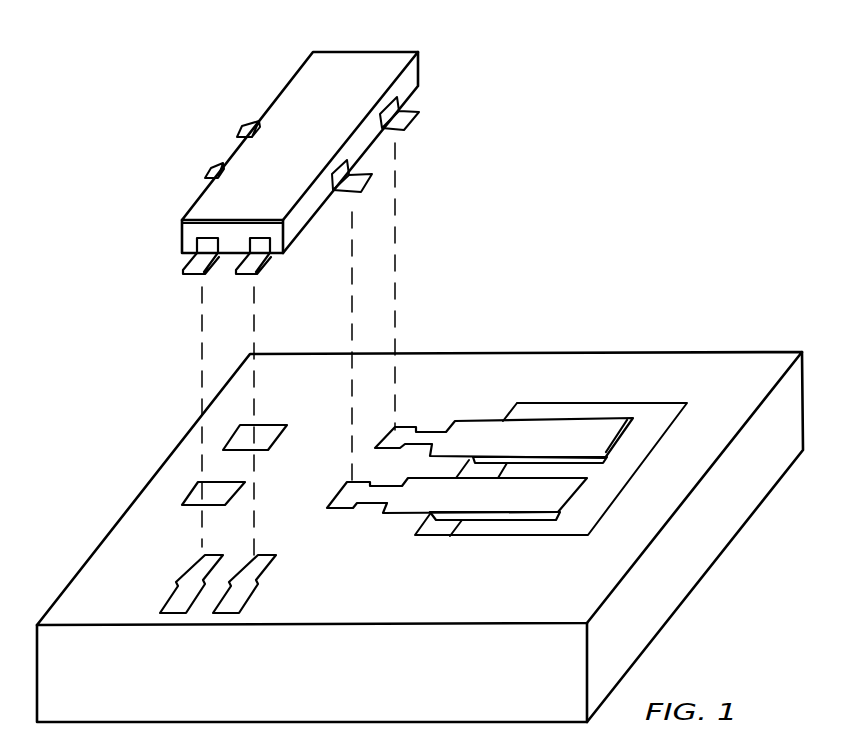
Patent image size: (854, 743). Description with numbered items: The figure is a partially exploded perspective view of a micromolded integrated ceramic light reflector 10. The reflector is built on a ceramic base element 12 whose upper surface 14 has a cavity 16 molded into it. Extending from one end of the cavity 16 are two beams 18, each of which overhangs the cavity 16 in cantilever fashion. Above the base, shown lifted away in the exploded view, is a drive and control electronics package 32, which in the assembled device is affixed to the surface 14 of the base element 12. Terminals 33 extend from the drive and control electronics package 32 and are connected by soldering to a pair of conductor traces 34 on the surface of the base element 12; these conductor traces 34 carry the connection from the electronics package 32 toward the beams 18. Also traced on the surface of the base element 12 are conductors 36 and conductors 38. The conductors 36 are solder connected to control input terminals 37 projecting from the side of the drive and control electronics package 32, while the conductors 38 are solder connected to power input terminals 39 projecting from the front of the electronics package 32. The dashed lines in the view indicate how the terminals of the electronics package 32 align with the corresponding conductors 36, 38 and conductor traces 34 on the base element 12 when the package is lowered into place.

The micromolded integrated ceramic light reflector 10 is at (672, 250).
The ceramic base element 12 is at (663, 602).
The upper surface 14 is at (723, 362).
The cavity 16 is at (508, 527).
The beam 18 is at (552, 430).
The drive and control electronics package 32 is at (385, 57).
The terminals 33 is at (419, 116).
The conductor traces 34 is at (410, 425).
The conductors 36 is at (237, 437).
The control input terminals 37 is at (240, 128).
The conductors 38 is at (177, 603).
The power input terminals 39 is at (187, 263).